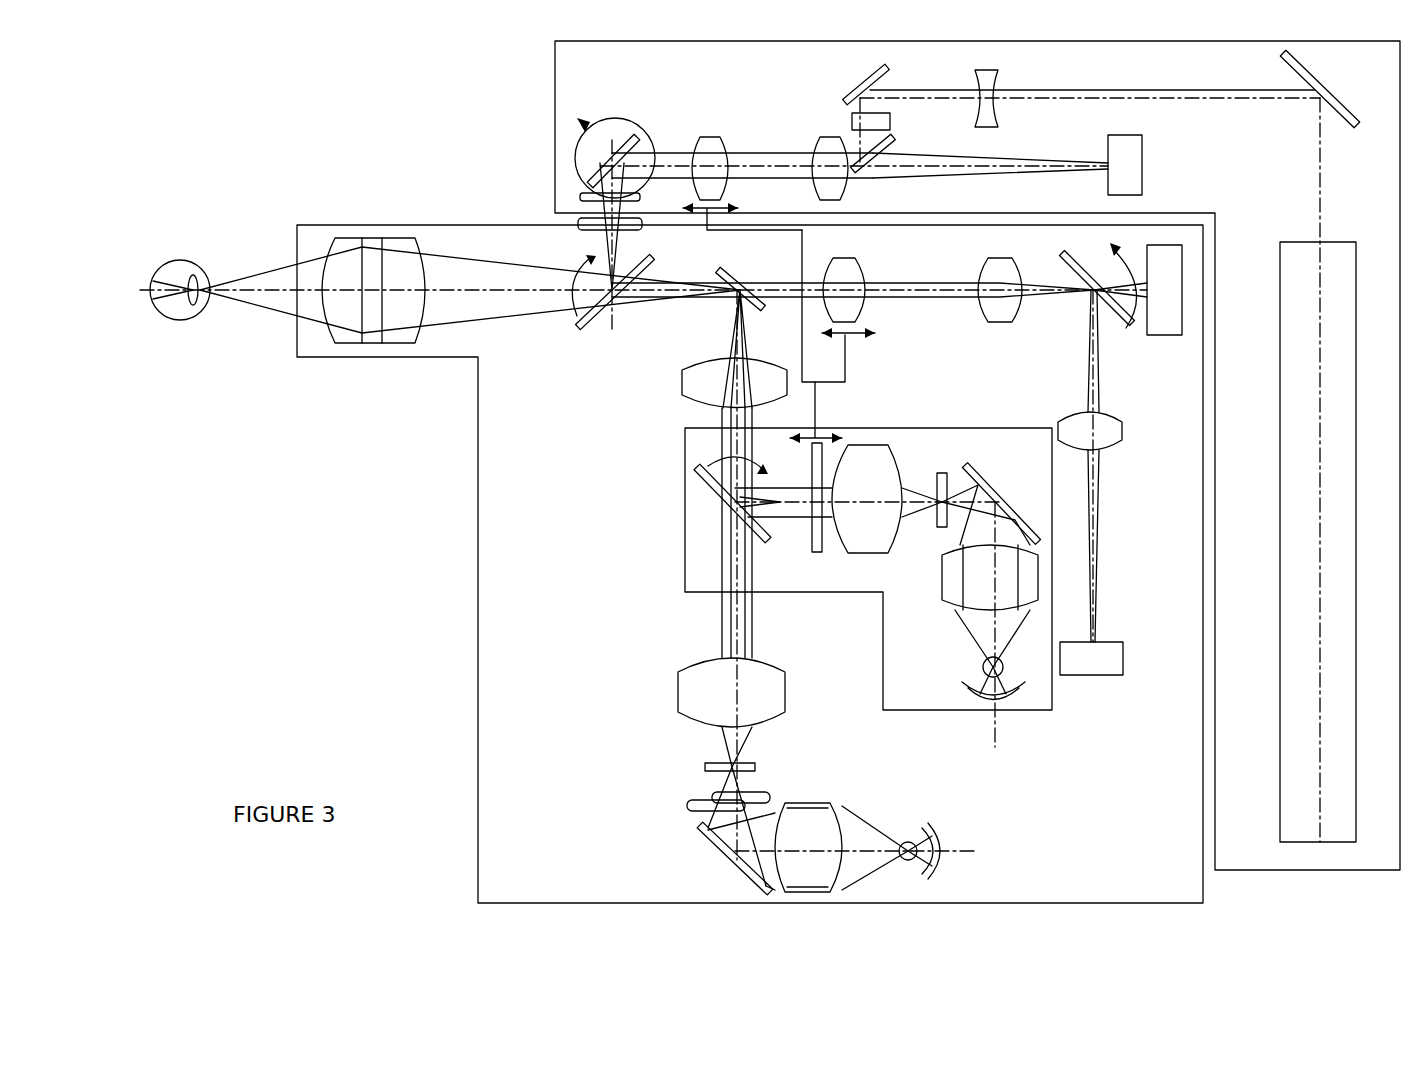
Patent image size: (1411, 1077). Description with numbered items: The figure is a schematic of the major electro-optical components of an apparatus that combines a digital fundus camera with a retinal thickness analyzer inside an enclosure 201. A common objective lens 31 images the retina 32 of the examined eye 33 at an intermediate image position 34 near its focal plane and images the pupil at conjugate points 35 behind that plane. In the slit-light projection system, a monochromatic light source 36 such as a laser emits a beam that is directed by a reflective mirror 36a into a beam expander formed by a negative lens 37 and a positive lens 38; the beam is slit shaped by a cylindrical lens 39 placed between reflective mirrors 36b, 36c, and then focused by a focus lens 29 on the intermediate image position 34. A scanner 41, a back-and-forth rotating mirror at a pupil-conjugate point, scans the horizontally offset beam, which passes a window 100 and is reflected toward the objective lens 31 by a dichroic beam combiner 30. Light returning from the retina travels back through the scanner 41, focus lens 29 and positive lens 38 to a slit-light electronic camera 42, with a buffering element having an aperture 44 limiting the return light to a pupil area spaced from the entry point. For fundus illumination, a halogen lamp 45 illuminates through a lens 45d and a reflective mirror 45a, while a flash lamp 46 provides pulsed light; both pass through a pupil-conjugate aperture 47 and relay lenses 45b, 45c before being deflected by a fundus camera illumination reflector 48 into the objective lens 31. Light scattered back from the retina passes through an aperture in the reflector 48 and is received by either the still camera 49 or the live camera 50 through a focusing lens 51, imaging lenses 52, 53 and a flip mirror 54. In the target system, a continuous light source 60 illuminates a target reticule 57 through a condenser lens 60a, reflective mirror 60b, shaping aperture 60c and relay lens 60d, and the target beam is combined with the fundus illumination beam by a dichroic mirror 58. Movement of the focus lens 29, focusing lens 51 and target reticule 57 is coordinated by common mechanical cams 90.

The housing 201 is at (1397, 868).
The retina 32 is at (148, 283).
The examined eye 33 is at (192, 274).
The objective lens 31 is at (410, 246).
The intermediate image position 34 is at (493, 293).
The dichroic beam combiner 30 is at (593, 328).
The scanner 41 is at (592, 180).
The points conjugate to the pupil 35 is at (617, 118).
The aperture 44 is at (580, 197).
The window 100 is at (640, 226).
The focus lens 29 is at (712, 137).
The positive lens 38 is at (826, 137).
The cylindrical lens 39 is at (890, 121).
The reflective mirror 36b is at (860, 84).
The reflective mirror 36c is at (893, 148).
The negative lens 37 is at (988, 72).
The reflective mirror 36a is at (1320, 76).
The monochromatic light source 36 is at (1318, 542).
The slit-light electronic camera 42 is at (1125, 165).
The fundus camera illumination reflector 48 is at (743, 275).
The focusing lens 51 is at (845, 262).
The imaging lens 52 is at (988, 262).
The flip mirror 54 is at (1083, 266).
The still camera 49 is at (1164, 290).
The common mechanical cams 90 is at (845, 362).
The imaging lens 53 is at (1115, 442).
The live camera 50 is at (1091, 658).
The relay lens 45c is at (690, 384).
The dichroic mirror 58 is at (700, 492).
The target reticule 57 is at (812, 545).
The relay lens 60d is at (858, 548).
The shaping aperture 60c is at (942, 474).
The reflective mirror 60b is at (1006, 498).
The condenser lens 60a is at (950, 570).
The continuous light source 60 is at (985, 668).
The relay lens 45b is at (690, 690).
The aperture 47 is at (757, 765).
The flash lamp 46 is at (772, 796).
The lens 45d is at (841, 847).
The halogen lamp 45 is at (905, 840).
The reflective mirror 45a is at (732, 860).